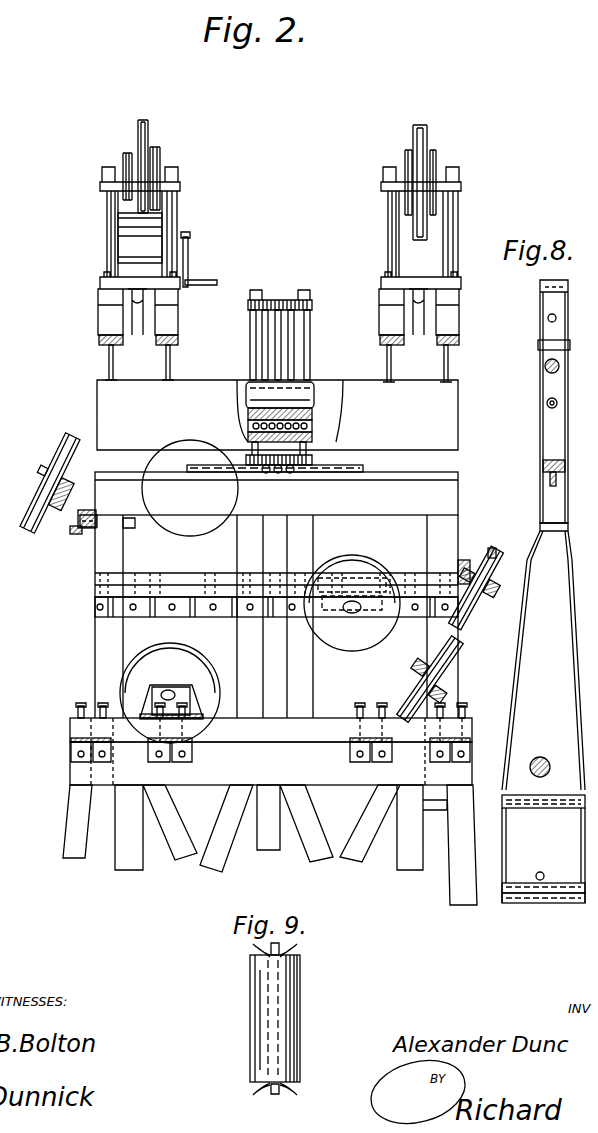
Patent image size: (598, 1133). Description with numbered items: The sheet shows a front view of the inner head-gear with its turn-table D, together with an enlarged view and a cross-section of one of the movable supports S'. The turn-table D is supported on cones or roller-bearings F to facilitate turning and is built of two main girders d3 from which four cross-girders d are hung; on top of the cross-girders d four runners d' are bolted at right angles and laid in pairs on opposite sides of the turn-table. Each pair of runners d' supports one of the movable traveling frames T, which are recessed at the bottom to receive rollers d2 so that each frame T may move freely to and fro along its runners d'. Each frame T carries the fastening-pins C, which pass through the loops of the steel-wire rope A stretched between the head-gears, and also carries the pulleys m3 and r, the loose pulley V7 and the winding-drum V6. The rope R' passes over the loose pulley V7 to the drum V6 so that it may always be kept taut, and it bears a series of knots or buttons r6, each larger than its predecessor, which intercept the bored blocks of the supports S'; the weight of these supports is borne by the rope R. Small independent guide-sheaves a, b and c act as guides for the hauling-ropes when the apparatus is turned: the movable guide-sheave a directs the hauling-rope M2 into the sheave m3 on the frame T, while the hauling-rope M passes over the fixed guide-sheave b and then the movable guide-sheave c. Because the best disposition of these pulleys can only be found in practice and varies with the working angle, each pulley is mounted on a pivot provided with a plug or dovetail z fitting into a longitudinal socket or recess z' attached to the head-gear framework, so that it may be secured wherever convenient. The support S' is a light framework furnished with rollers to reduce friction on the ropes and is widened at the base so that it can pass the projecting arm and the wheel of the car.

In FIG. 2, the sheave m3 is at (148, 135).
In FIG. 2, the loose pulley V7 is at (458, 160).
In FIG. 2, the pulley r is at (160, 165).
In FIG. 2, the winding-drum V6 is at (118, 226).
In FIG. 2, the traveling frame T is at (107, 255).
In FIG. 2, the fastening-pin C is at (139, 340).
In FIG. 2, the cross-girder d is at (265, 380).
In FIG. 2, the roller d2 is at (172, 337).
In FIG. 2, the runner d' is at (262, 363).
In FIG. 2, the turn-table D is at (282, 300).
In FIG. 2, the main girder d3 is at (292, 345).
In FIG. 2, the roller-bearing F is at (312, 412).
In FIG. 2, the plug or dovetail z is at (236, 537).
In FIG. 2, the longitudinal socket z' is at (278, 535).
In FIG. 2, the movable guide-sheave a is at (36, 498).
In FIG. 2, the movable guide-sheave c is at (358, 645).
In FIG. 2, the fixed guide-sheave b is at (130, 680).
In FIG. 8, the hauling-rope M2 is at (548, 316).
In FIG. 8, the rope R is at (534, 375).
In FIG. 8, the knot or button r6 is at (560, 403).
In FIG. 8, the rope R' is at (532, 408).
In FIG. 8, the movable support S' is at (543, 567).
In FIG. 9, the movable support S' is at (288, 1019).
In FIG. 8, the steel-wire rope A is at (541, 757).
In FIG. 8, the hauling-rope M is at (540, 872).